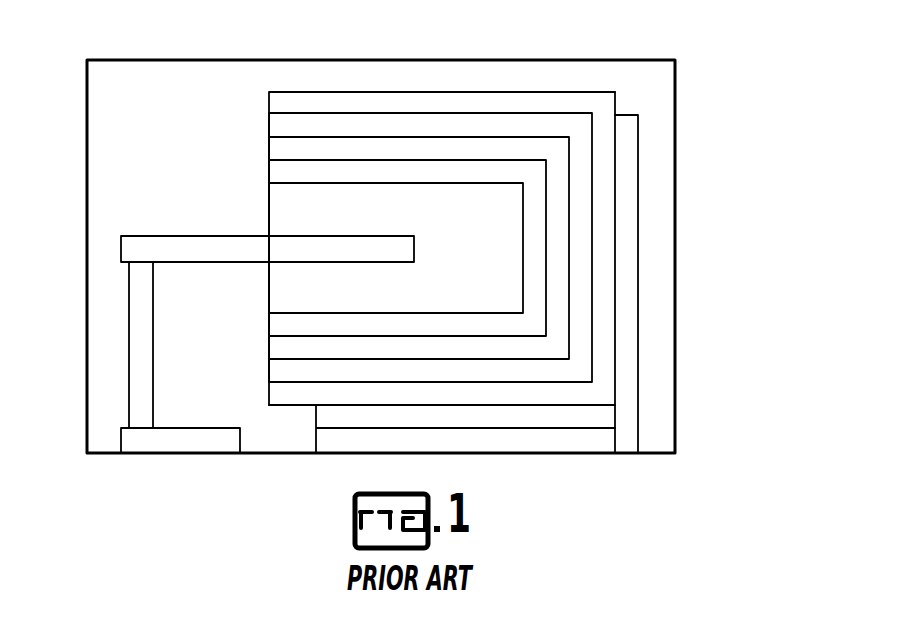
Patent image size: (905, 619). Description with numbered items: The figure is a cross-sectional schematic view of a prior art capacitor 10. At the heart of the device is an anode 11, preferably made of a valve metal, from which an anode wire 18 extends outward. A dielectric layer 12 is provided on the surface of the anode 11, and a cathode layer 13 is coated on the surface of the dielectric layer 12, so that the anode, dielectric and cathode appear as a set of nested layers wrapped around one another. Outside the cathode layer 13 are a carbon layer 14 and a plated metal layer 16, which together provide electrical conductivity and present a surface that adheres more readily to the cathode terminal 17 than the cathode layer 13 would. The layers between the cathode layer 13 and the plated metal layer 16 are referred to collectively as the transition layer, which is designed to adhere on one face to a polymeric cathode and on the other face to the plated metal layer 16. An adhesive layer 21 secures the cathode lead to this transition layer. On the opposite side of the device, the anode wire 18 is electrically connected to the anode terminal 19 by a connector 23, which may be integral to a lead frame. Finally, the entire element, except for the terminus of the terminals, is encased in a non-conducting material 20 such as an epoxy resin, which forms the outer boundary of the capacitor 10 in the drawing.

The prior art capacitor 10 is at (737, 157).
The anode 11 is at (302, 206).
The dielectric layer 12 is at (320, 170).
The cathode layer 13 is at (360, 148).
The carbon layer 14 is at (409, 123).
The plated metal layer 16 is at (603, 310).
The cathode terminal 17 is at (628, 362).
The anode wire 18 is at (138, 233).
The anode terminal 19 is at (140, 453).
The non-conducting material 20 is at (155, 103).
The adhesive layer 21 is at (598, 418).
The connector 23 is at (130, 322).